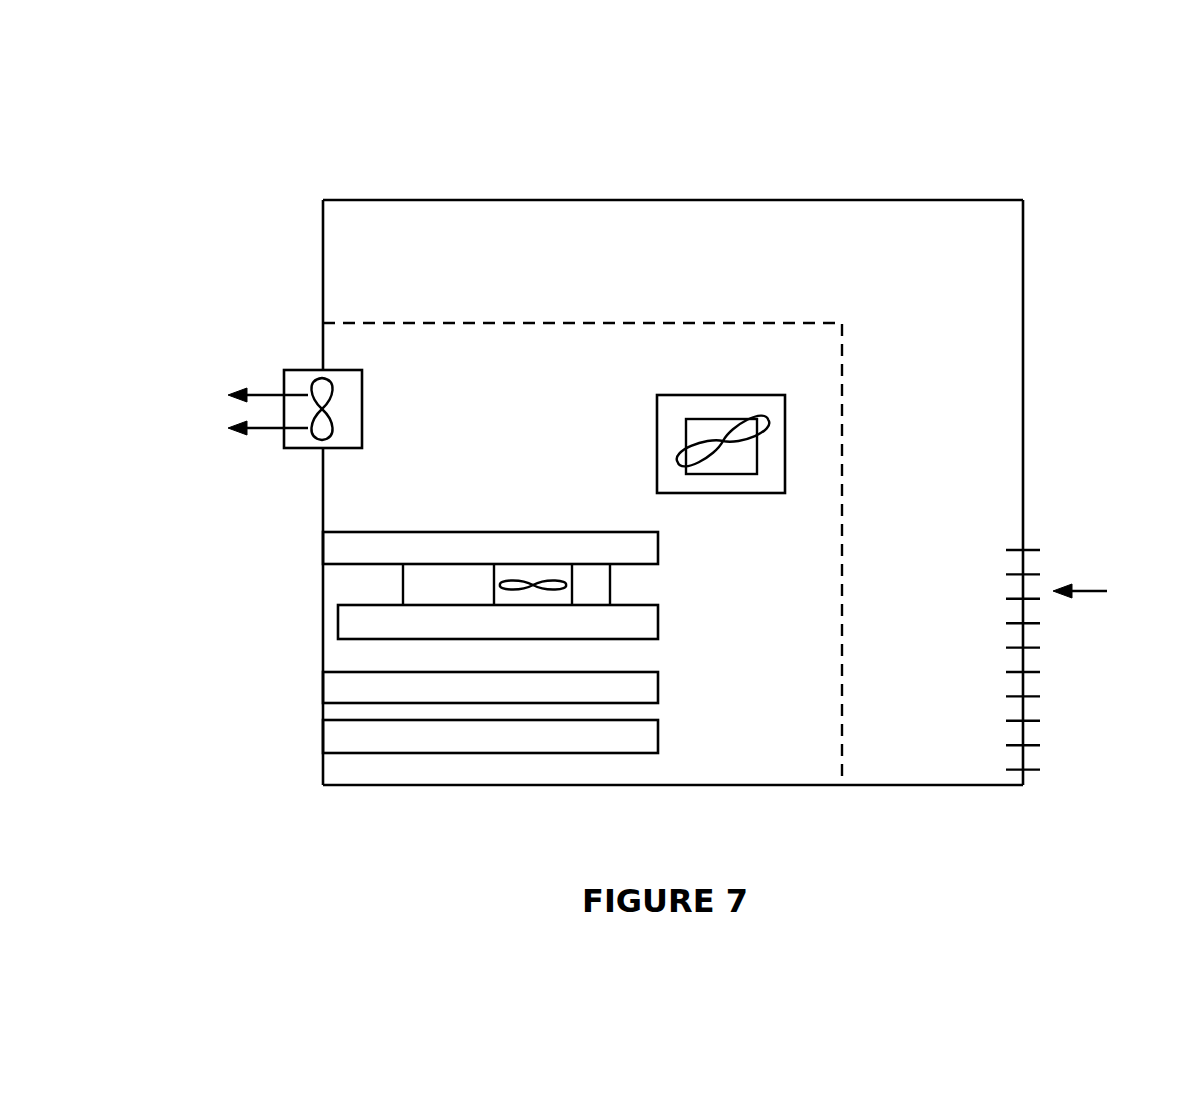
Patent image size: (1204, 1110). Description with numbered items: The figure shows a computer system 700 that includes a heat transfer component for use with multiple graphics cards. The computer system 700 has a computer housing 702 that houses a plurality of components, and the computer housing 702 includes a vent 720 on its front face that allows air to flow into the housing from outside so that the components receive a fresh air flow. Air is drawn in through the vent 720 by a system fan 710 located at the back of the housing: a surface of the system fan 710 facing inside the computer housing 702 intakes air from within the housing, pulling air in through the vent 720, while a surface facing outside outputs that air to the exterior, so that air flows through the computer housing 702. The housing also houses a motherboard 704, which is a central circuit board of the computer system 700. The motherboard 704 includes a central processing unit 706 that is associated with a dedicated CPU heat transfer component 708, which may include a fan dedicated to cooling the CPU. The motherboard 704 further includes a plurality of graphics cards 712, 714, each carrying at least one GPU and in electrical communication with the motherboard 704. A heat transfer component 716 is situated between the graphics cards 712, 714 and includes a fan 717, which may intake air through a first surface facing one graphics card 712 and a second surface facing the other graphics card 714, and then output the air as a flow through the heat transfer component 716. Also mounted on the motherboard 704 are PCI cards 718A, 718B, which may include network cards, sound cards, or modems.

The computer system 700 is at (617, 168).
The computer housing 702 is at (895, 200).
The motherboard 704 is at (817, 752).
The central processing unit (CPU) 706 is at (767, 395).
The dedicated CPU heat transfer component 708 is at (785, 435).
The system fan 710 is at (362, 410).
The graphics card 712 is at (658, 548).
The graphics card 714 is at (658, 620).
The heat transfer component 716 is at (610, 585).
The fan 717 is at (523, 582).
The peripheral component interconnect (PCI) card 718A is at (658, 688).
The peripheral component interconnect (PCI) card 718B is at (658, 733).
The vent 720 is at (1032, 550).